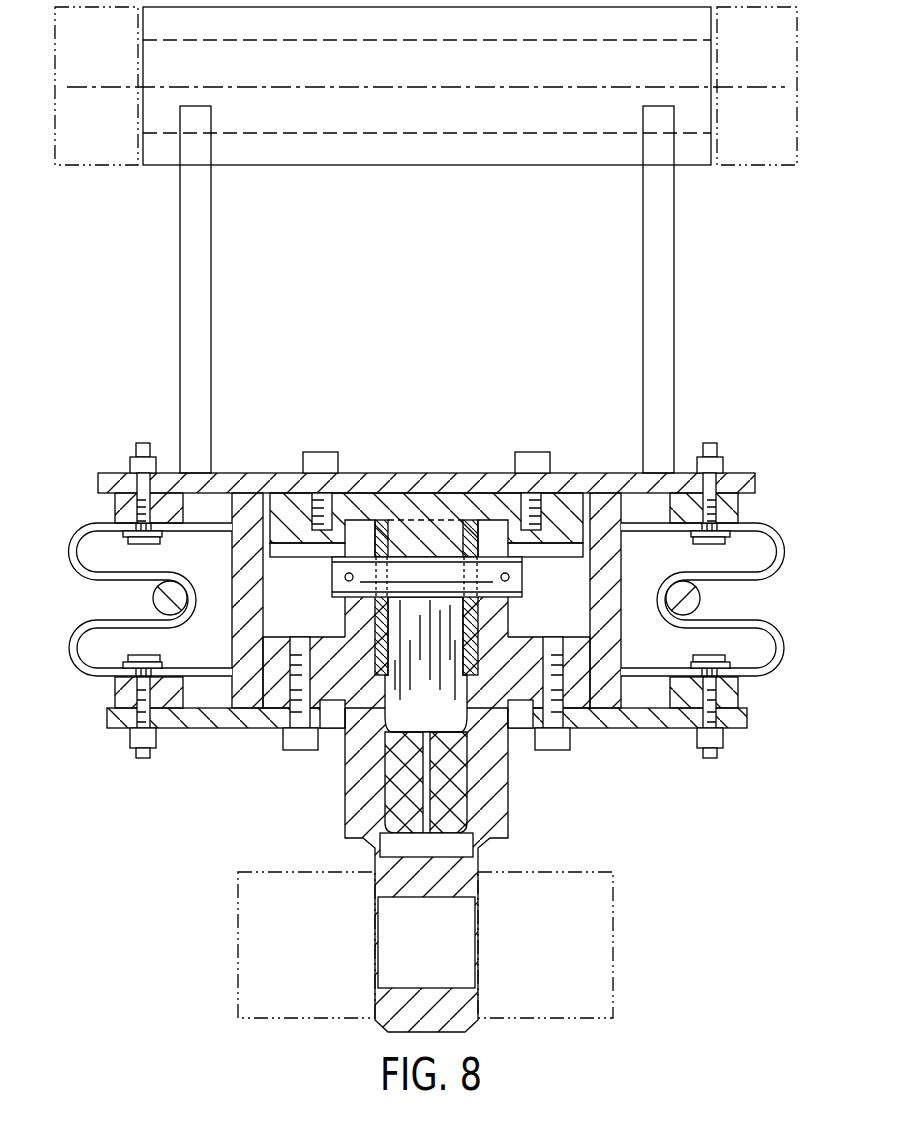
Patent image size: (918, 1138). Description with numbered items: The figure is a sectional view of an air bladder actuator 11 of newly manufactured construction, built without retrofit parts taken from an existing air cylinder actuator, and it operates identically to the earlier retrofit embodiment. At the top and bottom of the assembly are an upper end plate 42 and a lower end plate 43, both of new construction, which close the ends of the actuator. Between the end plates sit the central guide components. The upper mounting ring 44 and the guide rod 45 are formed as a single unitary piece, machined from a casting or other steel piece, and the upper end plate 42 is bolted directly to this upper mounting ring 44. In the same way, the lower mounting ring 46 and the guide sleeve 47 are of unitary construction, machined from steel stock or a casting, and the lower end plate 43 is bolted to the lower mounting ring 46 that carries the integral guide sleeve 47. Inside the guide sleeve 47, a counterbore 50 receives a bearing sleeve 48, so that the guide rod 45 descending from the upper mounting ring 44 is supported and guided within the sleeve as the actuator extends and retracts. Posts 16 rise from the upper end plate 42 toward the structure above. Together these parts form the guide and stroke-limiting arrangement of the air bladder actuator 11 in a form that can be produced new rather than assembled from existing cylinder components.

The air bladder actuator 11 is at (776, 530).
The support post 16 is at (201, 323).
The upper end plate 42 is at (260, 485).
The lower end plate 43 is at (215, 720).
The upper mounting ring 44 is at (572, 492).
The guide rod 45 is at (497, 618).
The lower mounting ring 46 is at (578, 665).
The guide sleeve 47 is at (493, 793).
The bearing sleeve 48 is at (380, 627).
The counterbore 50 is at (388, 655).